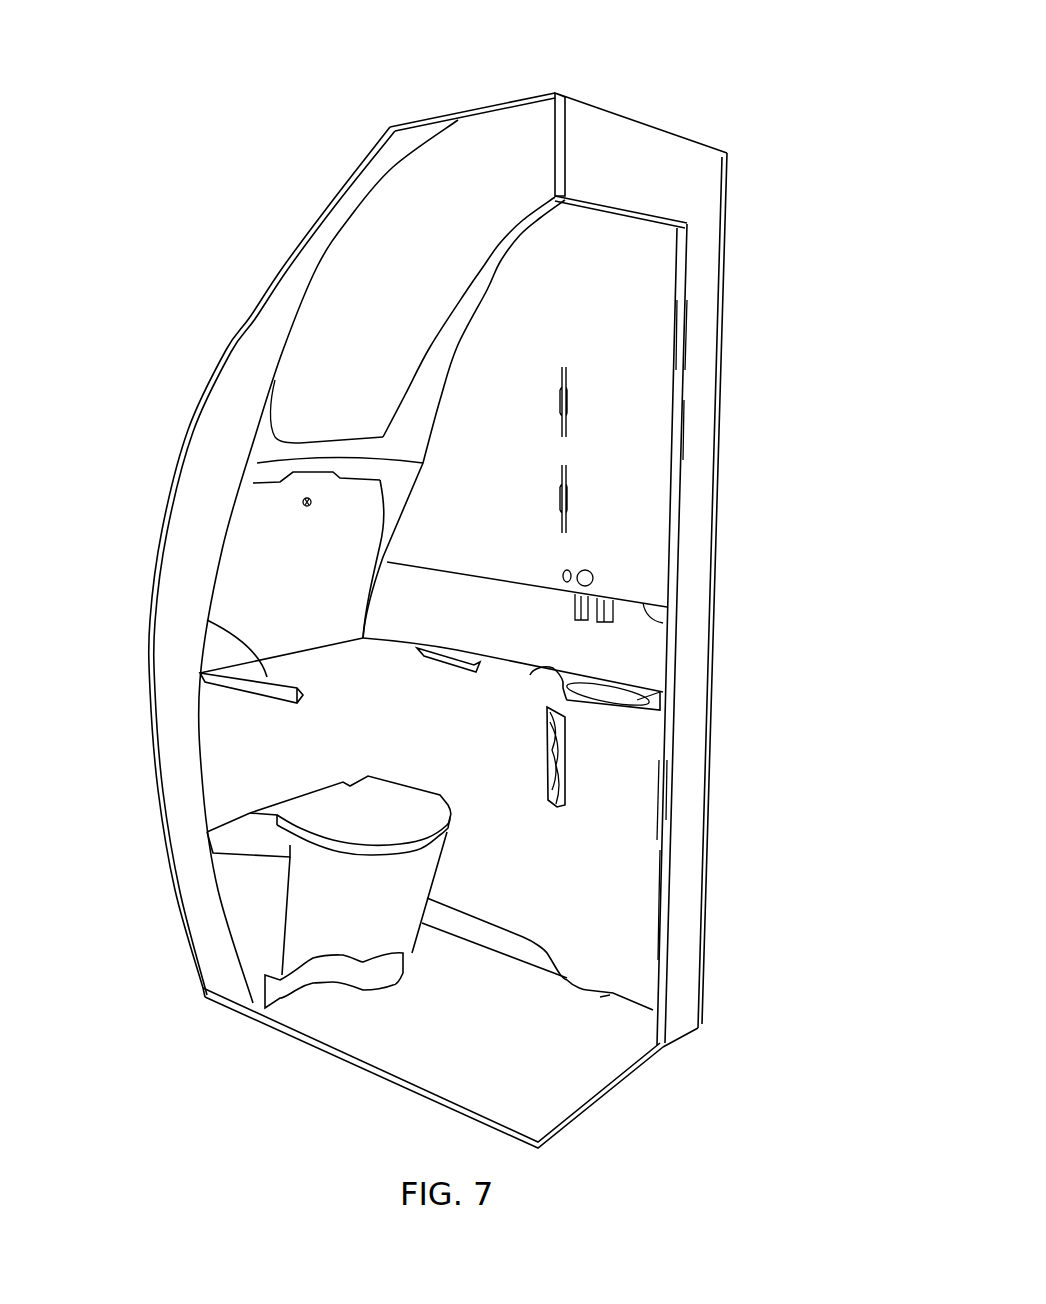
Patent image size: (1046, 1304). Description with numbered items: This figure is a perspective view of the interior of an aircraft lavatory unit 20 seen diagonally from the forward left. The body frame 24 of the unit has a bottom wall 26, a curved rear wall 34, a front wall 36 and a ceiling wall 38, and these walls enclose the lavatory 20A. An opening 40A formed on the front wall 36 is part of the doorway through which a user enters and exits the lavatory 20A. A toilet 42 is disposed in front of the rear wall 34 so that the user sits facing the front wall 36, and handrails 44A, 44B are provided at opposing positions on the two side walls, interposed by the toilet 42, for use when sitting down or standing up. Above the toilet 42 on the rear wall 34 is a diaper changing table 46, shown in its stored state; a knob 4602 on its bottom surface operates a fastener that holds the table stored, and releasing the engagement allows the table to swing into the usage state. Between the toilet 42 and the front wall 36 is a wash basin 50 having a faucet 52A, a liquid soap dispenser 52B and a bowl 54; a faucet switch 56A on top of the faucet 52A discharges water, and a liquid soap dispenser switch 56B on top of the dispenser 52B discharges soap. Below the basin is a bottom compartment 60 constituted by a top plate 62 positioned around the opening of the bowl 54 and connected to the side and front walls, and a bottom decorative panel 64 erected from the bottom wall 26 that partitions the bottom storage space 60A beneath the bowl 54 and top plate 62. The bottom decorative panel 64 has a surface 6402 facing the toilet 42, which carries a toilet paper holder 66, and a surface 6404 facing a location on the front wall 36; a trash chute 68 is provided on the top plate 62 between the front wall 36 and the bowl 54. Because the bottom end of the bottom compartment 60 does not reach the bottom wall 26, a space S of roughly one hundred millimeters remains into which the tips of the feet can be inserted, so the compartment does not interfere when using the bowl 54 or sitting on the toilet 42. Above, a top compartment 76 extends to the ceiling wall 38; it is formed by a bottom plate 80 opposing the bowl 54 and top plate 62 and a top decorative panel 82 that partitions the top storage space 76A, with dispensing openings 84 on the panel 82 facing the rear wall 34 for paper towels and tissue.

The aircraft lavatory unit 20 is at (308, 127).
The lavatory 20A is at (578, 344).
The body frame 24 is at (190, 947).
The bottom wall 26 is at (467, 1088).
The rear wall 34 is at (218, 363).
The front wall 36 is at (697, 500).
The ceiling wall 38 is at (533, 93).
The opening 40A is at (683, 303).
The toilet 42 is at (403, 807).
The handrail 44A is at (263, 673).
The handrail 44B is at (457, 647).
The diaper changing table 46 is at (273, 547).
The knob 4602 is at (280, 496).
The wash basin 50 is at (555, 612).
The faucet 52A is at (580, 622).
The liquid soap dispenser 52B is at (605, 627).
The bowl 54 is at (597, 692).
The faucet switch 56A is at (567, 568).
The liquid soap dispenser switch 56B is at (592, 570).
The bottom compartment 60 is at (622, 820).
The bottom storage space 60A is at (623, 790).
The top plate 62 is at (533, 673).
The bottom decorative panel 64 is at (622, 865).
The surface facing the toilet side 6402 is at (537, 883).
The surface facing the front wall 6404 is at (622, 908).
The toilet paper holder 66 is at (547, 757).
The trash chute 68 is at (663, 703).
The top compartment 76 is at (640, 347).
The top storage space 76A is at (637, 380).
The bottom plate 80 is at (663, 623).
The top decorative panel 82 is at (643, 430).
The dispensing openings 84 is at (563, 477).
The space S is at (600, 997).